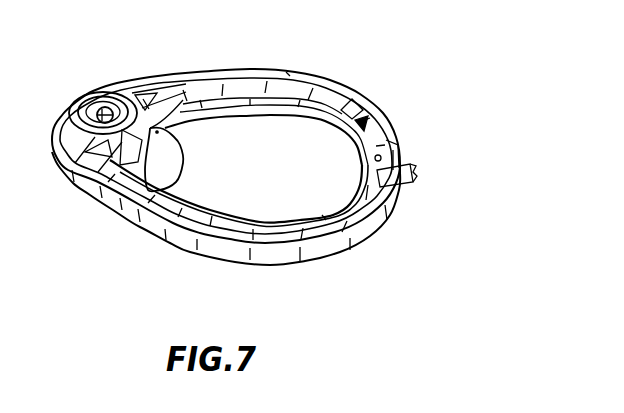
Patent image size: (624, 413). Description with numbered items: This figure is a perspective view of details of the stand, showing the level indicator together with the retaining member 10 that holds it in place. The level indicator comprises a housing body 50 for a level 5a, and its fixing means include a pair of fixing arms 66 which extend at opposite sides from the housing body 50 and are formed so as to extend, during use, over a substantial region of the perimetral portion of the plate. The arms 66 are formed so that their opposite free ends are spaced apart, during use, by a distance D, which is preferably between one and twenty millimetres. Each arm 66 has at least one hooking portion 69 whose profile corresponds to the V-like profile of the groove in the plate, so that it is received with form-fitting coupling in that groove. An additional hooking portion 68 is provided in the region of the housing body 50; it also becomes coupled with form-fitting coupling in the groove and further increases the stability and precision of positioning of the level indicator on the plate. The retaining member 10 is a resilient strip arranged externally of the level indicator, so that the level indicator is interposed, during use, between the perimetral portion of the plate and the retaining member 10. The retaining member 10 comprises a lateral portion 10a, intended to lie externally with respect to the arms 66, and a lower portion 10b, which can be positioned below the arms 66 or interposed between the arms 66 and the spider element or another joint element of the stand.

The retaining member 10 is at (398, 140).
The lateral portion 10a is at (368, 209).
The lower portion 10b is at (280, 110).
The housing body 50 is at (104, 108).
The level 5a is at (82, 148).
The fixing arms 66 is at (285, 71).
The additional hooking portion 68 is at (150, 190).
The hooking portion 69 is at (362, 106).
The distance D is at (414, 168).